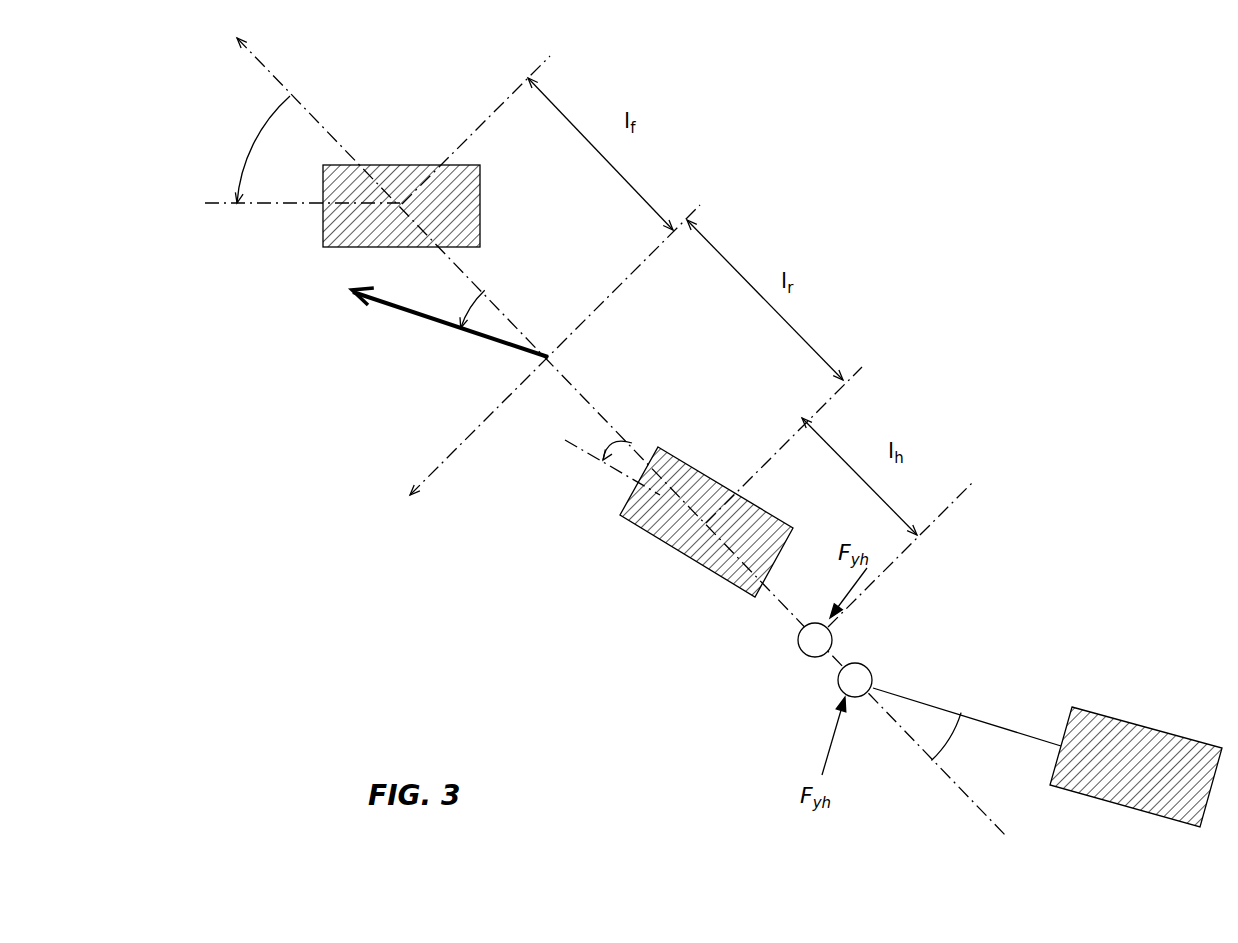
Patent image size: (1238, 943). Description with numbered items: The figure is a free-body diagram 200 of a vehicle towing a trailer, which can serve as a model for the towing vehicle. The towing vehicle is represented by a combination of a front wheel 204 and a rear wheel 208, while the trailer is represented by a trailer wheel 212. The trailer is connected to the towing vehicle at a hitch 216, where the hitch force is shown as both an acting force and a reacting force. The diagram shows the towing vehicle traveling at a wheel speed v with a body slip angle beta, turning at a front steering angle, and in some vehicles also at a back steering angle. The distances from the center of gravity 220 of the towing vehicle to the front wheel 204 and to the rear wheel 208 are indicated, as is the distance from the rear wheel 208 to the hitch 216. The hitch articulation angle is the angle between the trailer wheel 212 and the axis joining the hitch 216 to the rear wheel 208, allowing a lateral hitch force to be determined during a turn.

The free-body diagram 200 is at (927, 303).
The front wheel 204 is at (387, 163).
The rear wheel 208 is at (678, 458).
The trailer wheel 212 is at (1105, 716).
The hitch 216 is at (797, 643).
The center of gravity 220 is at (547, 360).